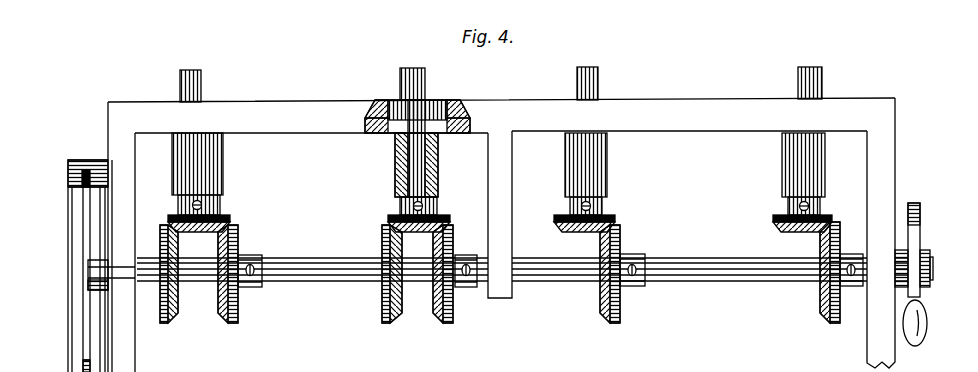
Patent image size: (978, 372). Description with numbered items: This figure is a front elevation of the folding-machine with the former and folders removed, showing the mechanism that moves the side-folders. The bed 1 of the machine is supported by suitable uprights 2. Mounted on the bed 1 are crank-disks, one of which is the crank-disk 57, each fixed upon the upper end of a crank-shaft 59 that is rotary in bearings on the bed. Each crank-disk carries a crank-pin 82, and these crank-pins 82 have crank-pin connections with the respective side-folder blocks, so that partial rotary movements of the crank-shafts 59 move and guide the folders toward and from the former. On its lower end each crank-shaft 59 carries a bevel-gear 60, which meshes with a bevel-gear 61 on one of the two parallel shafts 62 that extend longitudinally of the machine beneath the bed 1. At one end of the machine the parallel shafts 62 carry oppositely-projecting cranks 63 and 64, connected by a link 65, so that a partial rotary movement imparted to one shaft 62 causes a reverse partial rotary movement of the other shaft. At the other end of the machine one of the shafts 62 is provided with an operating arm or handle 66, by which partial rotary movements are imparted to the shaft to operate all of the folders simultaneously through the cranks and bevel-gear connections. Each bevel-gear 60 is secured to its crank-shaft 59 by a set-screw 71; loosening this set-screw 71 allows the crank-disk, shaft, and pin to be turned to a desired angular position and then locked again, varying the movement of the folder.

The bed 1 is at (716, 99).
The uprights 2 is at (108, 140).
The crank-disk 57 is at (440, 101).
The crank-shaft 59 is at (440, 160).
The bevel-gear 60 is at (170, 218).
The bevel-gear 61 is at (176, 316).
The parallel shaft 62 is at (305, 263).
The crank 63 is at (100, 312).
The crank 64 is at (97, 223).
The link 65 is at (76, 287).
The operating arm or handle 66 is at (918, 301).
The set-screw 71 is at (178, 202).
The crank-pin 82 is at (217, 66).